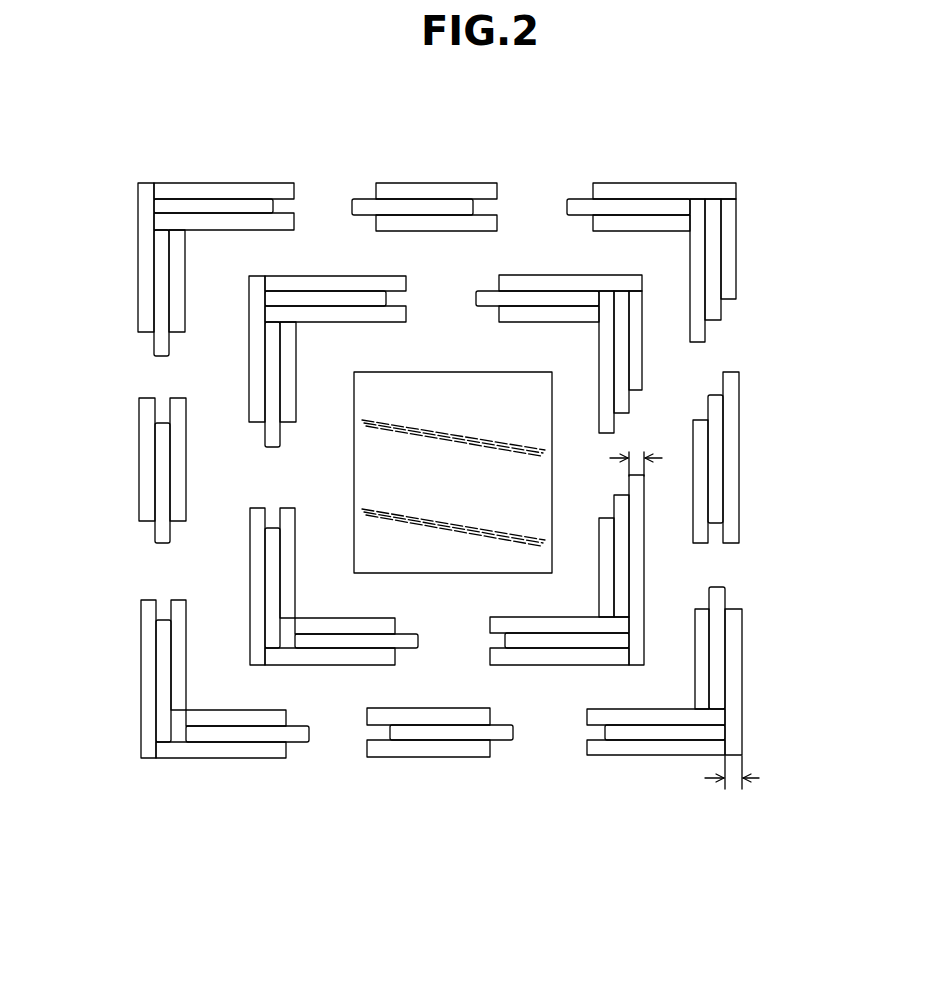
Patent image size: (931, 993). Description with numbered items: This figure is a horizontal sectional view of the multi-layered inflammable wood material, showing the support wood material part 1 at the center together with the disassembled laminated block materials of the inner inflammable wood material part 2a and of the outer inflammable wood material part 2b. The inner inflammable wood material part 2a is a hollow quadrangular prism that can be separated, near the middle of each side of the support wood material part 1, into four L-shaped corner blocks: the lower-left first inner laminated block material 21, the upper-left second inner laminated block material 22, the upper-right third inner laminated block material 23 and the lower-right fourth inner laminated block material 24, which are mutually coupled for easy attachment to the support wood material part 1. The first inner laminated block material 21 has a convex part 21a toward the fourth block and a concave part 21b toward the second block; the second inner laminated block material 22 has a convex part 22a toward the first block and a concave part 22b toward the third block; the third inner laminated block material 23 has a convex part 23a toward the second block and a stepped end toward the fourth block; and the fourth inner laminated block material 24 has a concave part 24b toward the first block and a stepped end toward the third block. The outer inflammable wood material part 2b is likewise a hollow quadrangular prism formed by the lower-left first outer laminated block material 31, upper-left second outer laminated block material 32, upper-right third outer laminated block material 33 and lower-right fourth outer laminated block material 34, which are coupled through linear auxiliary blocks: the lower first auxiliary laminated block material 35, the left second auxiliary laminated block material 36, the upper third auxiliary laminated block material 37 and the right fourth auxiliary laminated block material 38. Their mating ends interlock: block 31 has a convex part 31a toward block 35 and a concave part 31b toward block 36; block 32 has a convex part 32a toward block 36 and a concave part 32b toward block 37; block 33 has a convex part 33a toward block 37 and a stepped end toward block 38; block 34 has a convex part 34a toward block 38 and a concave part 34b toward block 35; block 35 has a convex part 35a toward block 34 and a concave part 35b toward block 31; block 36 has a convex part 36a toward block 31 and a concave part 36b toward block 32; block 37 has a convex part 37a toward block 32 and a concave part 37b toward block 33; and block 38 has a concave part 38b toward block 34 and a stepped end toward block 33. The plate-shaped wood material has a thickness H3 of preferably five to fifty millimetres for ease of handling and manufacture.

The support wood material part 1 is at (462, 500).
The inner inflammable wood material part 2a is at (661, 360).
The outer inflammable wood material part 2b is at (752, 223).
The first inner laminated block material 21 is at (355, 579).
The convex part 21a is at (418, 642).
The concave part 21b is at (272, 524).
The second inner laminated block material 22 is at (333, 365).
The convex part 22a is at (266, 444).
The concave part 22b is at (388, 298).
The third inner laminated block material 23 is at (529, 338).
The convex part 23a is at (476, 298).
The fourth inner laminated block material 24 is at (537, 570).
The concave part 24b is at (503, 641).
The first outer laminated block material 31 is at (231, 683).
The convex part 31a is at (310, 735).
The concave part 31b is at (163, 613).
The second outer laminated block material 32 is at (212, 244).
The convex part 32a is at (153, 357).
The concave part 32b is at (280, 206).
The third outer laminated block material 33 is at (633, 230).
The convex part 33a is at (567, 207).
The fourth outer laminated block material 34 is at (666, 701).
The convex part 34a is at (722, 587).
The concave part 34b is at (604, 733).
The first auxiliary laminated block material 35 is at (439, 761).
The convex part 35a is at (513, 736).
The concave part 35b is at (388, 733).
The second auxiliary laminated block material 36 is at (142, 451).
The convex part 36a is at (160, 542).
The concave part 36b is at (162, 415).
The third auxiliary laminated block material 37 is at (431, 175).
The convex part 37a is at (352, 207).
The concave part 37b is at (475, 207).
The fourth auxiliary laminated block material 38 is at (737, 490).
The concave part 38b is at (716, 527).
The thickness H3 is at (704, 608).